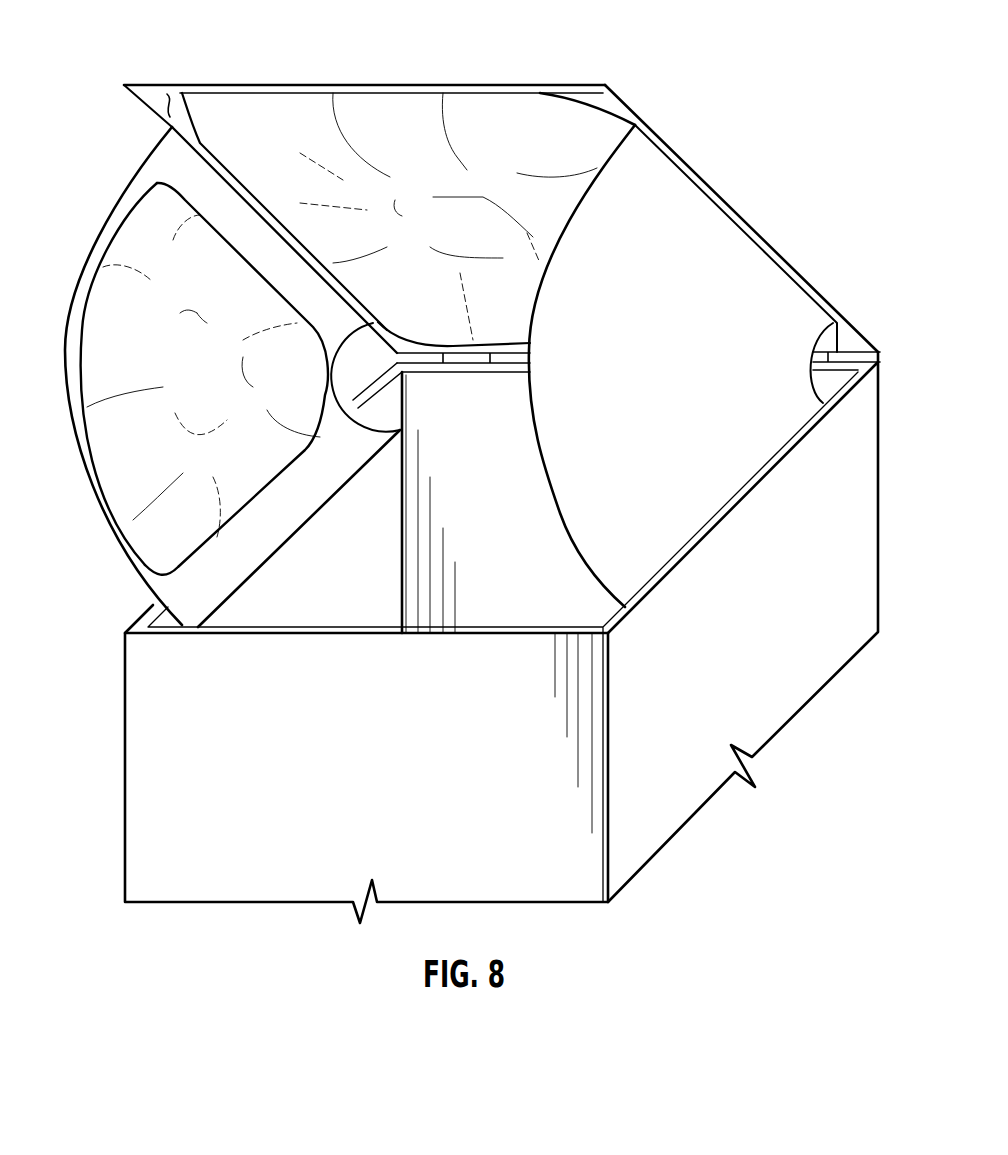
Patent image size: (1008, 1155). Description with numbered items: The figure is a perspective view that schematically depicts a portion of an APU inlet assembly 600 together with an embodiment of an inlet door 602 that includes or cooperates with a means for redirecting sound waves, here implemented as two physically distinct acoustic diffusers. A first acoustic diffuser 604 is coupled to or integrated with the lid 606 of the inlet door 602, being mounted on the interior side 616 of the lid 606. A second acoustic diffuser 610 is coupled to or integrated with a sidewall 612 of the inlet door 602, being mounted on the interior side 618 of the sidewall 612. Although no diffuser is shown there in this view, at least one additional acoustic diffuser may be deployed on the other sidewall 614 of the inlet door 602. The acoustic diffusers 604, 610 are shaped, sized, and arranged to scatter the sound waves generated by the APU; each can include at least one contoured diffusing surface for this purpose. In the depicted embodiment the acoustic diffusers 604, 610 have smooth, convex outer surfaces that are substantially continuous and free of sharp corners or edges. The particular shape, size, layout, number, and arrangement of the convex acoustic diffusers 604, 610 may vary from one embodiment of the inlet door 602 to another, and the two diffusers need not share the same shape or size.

The APU inlet assembly 600 is at (831, 706).
The inlet door 602 is at (806, 279).
The first acoustic diffuser 604 is at (542, 88).
The lid 606 is at (385, 85).
The second acoustic diffuser 610 is at (108, 233).
The sidewall 612 is at (110, 540).
The other sidewall 614 is at (558, 513).
The interior side of the lid 616 is at (163, 107).
The interior side of the sidewall 618 is at (90, 455).